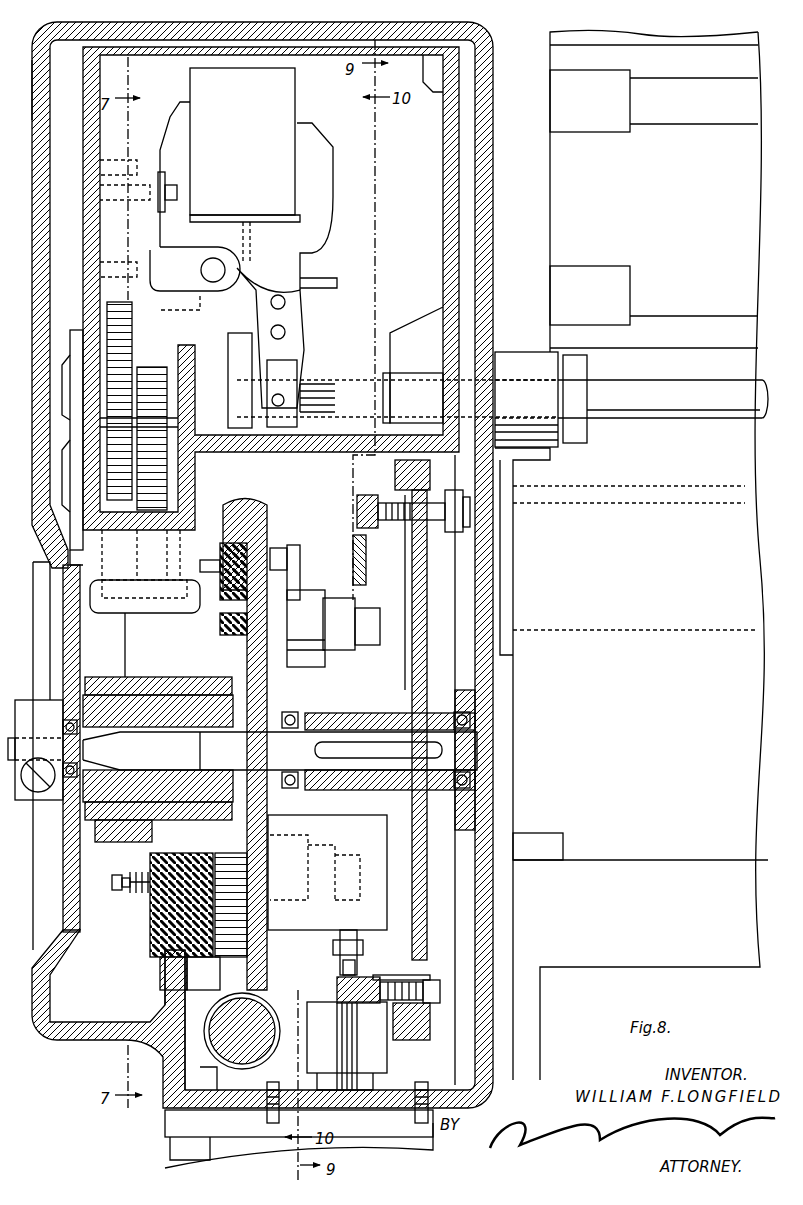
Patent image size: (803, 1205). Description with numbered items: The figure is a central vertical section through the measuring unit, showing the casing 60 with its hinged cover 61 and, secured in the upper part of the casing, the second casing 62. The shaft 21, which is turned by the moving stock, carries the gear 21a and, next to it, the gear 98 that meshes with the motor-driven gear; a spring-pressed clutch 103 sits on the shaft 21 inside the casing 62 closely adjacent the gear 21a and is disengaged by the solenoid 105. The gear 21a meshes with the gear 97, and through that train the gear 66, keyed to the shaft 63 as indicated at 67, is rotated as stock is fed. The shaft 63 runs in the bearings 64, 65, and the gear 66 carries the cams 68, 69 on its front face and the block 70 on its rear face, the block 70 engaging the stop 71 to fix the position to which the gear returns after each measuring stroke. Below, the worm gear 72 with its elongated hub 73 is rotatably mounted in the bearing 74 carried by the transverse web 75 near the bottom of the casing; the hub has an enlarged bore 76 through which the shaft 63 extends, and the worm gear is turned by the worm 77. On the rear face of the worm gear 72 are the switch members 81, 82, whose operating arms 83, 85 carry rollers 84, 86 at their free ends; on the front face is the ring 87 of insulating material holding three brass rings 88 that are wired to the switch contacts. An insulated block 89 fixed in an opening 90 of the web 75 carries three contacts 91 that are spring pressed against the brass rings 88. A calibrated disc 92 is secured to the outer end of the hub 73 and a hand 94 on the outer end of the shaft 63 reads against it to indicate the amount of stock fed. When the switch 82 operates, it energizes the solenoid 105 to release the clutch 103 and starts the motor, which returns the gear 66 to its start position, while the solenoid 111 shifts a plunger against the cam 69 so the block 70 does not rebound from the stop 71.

The shaft 21 is at (338, 392).
The gear 21a is at (146, 368).
The casing 60 is at (492, 286).
The cover 61 is at (33, 88).
The second casing 62 is at (450, 222).
The shaft 63 is at (348, 772).
The bearing 64 is at (482, 717).
The bearing 65 is at (60, 792).
The gear 66 is at (422, 884).
The key 67 is at (345, 742).
The cam 68 is at (372, 496).
The cam 69 is at (343, 988).
The block 70 is at (452, 490).
The stop 71 is at (466, 535).
The worm gear 72 is at (240, 510).
The elongated hub 73 is at (180, 700).
The bearing 74 is at (105, 680).
The transverse web 75 is at (168, 1006).
The enlarged bore 76 is at (133, 727).
The worm 77 is at (252, 1068).
The switch member 81 is at (298, 590).
The switch member 82 is at (327, 872).
The operating arm 83 is at (358, 598).
The roller 84 is at (355, 560).
The operating arm 85 is at (360, 935).
The roller 86 is at (358, 968).
The ring of insulating material 87 is at (240, 617).
The brass rings 88 is at (230, 600).
The insulated block 89 is at (157, 928).
The opening 90 is at (190, 973).
The contacts 91 is at (198, 878).
The disc 92 is at (72, 920).
The hand 94 is at (40, 580).
The gear 97 is at (168, 477).
The gear 98 is at (124, 320).
The clutch 103 is at (215, 378).
The solenoid 105 is at (243, 247).
The solenoid 111 is at (350, 1050).